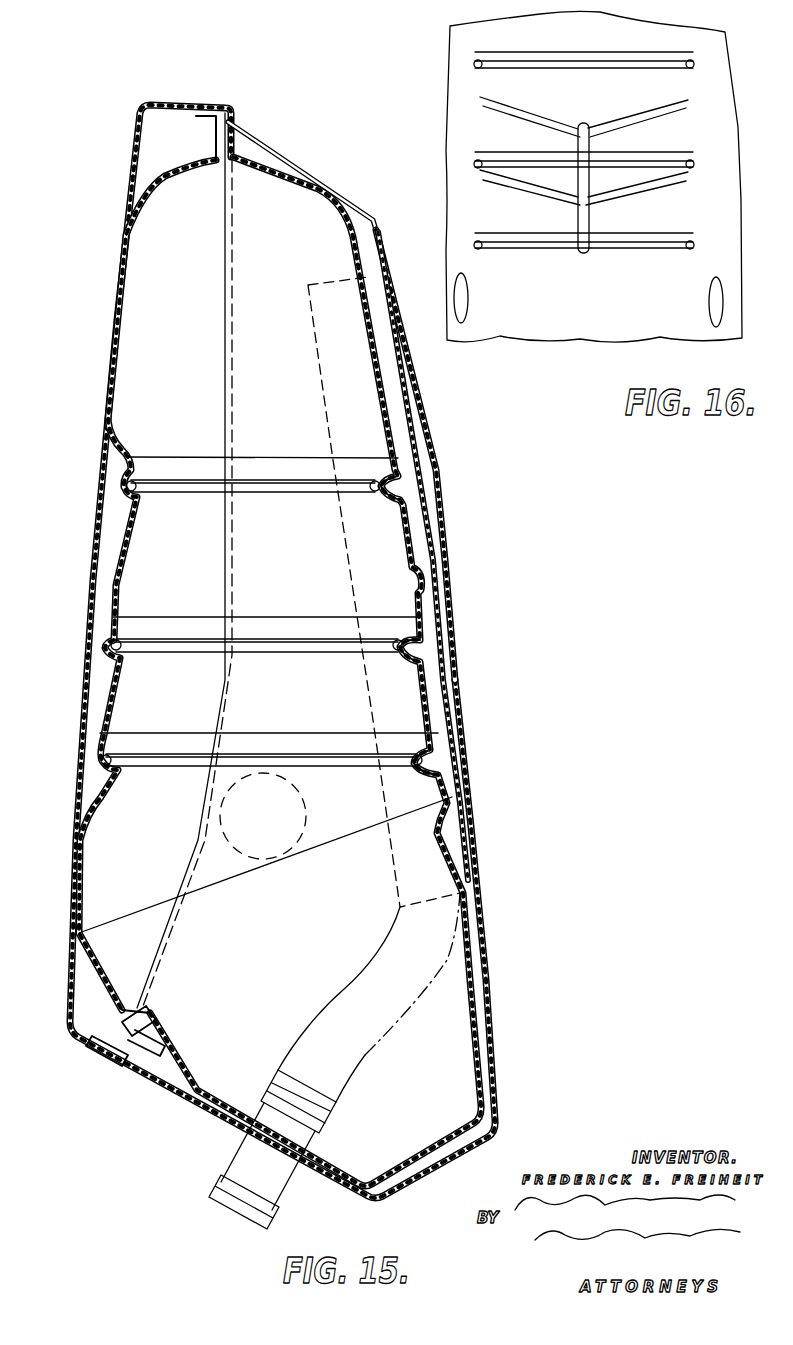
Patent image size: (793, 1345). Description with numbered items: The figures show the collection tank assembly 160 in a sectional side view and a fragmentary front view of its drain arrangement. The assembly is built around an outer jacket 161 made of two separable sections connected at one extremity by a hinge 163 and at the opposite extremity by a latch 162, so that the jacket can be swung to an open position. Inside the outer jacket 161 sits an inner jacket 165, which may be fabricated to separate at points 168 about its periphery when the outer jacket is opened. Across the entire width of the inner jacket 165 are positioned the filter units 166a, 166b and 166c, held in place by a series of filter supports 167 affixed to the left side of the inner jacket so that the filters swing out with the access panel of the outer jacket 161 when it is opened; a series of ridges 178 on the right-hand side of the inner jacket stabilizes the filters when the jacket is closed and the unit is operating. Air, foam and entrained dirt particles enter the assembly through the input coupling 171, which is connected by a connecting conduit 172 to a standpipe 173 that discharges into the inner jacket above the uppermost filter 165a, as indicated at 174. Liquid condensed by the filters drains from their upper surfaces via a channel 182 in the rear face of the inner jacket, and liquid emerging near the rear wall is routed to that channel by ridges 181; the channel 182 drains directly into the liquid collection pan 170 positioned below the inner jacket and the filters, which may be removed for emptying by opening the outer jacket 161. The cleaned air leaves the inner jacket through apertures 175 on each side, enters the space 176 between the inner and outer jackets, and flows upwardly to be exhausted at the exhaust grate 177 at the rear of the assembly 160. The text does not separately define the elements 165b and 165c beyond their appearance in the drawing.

In FIG. 15, the collection tank assembly 160 is at (512, 454).
In FIG. 15, the outer jacket 161 is at (448, 530).
In FIG. 15, the latch 162 is at (232, 107).
In FIG. 15, the hinge 163 is at (127, 1068).
In FIG. 15, the inner jacket 165 is at (348, 190).
In FIG. 16, the inner jacket 165 is at (578, 99).
In FIG. 16, the uppermost filter 165a is at (565, 40).
In FIG. 16, the middle cross bar 165b is at (662, 146).
In FIG. 16, the lower cross bar 165c is at (678, 235).
In FIG. 15, the filter unit 166a is at (176, 448).
In FIG. 15, the filter unit 166b is at (265, 612).
In FIG. 15, the filter unit 166c is at (262, 728).
In FIG. 15, the filter support 167 is at (292, 483).
In FIG. 16, the filter support 167 is at (595, 70).
In FIG. 15, the separation points 168 is at (234, 138).
In FIG. 15, the liquid collection pan 170 is at (298, 955).
In FIG. 15, the input coupling 171 is at (288, 1182).
In FIG. 15, the connecting conduit 172 is at (392, 1012).
In FIG. 15, the standpipe 173 is at (392, 564).
In FIG. 15, the standpipe discharge 174 is at (336, 280).
In FIG. 15, the apertures 175 is at (245, 822).
In FIG. 16, the apertures 175 is at (462, 300).
In FIG. 15, the space between inner and outer jackets 176 is at (448, 712).
In FIG. 15, the exhaust grate 177 is at (420, 428).
In FIG. 15, the ridges 178 is at (392, 490).
In FIG. 16, the ridges 181 is at (525, 112).
In FIG. 16, the channel 182 is at (590, 250).